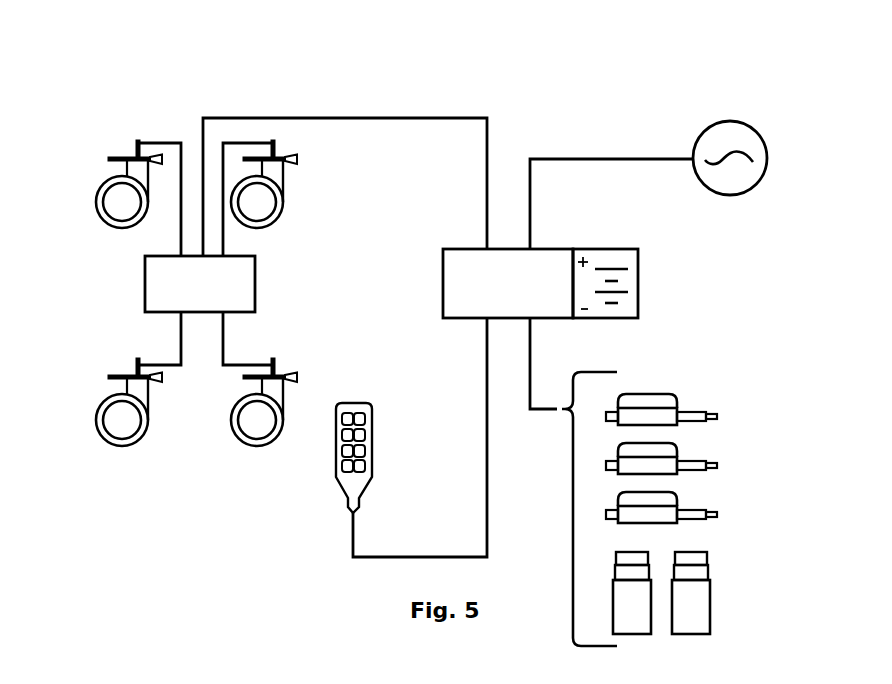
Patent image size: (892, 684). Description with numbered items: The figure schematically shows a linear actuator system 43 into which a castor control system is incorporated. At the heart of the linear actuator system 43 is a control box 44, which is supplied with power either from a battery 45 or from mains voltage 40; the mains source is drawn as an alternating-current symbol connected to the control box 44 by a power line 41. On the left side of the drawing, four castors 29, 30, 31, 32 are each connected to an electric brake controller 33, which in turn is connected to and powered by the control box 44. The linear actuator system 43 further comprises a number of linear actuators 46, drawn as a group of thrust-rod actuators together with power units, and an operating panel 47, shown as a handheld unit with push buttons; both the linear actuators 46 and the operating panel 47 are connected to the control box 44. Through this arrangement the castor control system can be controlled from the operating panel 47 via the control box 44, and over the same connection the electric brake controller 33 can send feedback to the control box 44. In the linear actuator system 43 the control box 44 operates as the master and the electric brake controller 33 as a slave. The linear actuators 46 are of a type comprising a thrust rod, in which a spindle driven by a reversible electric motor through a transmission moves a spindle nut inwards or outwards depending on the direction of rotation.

The castor 29 is at (283, 181).
The castor 30 is at (237, 436).
The castor 31 is at (105, 183).
The castor 32 is at (105, 440).
The electric brake controller 33 is at (145, 284).
The mains voltage 40 is at (755, 188).
The power line 41 is at (552, 157).
The linear actuator system 43 is at (216, 73).
The control box 44 is at (443, 292).
The battery 45 is at (638, 282).
The linear actuators 46 is at (760, 475).
The operating panel 47 is at (371, 425).